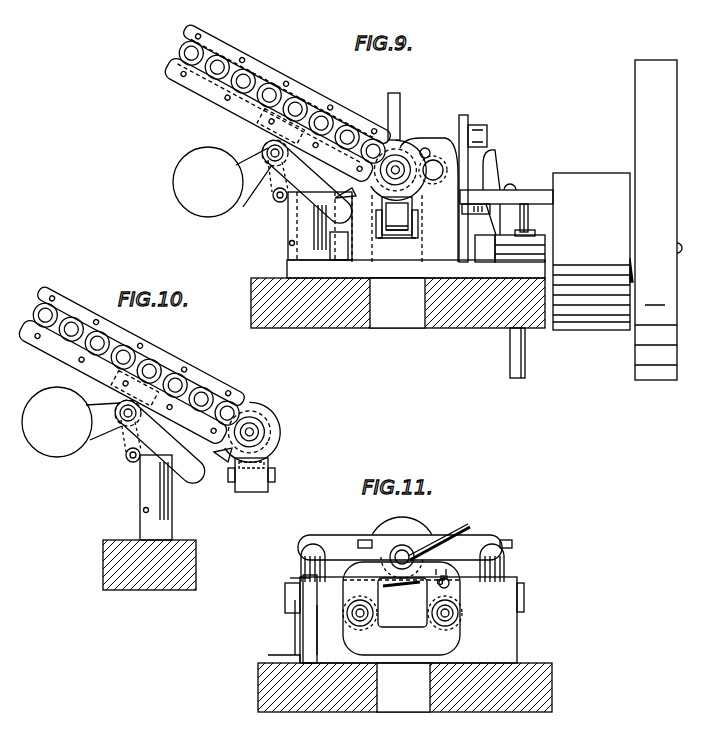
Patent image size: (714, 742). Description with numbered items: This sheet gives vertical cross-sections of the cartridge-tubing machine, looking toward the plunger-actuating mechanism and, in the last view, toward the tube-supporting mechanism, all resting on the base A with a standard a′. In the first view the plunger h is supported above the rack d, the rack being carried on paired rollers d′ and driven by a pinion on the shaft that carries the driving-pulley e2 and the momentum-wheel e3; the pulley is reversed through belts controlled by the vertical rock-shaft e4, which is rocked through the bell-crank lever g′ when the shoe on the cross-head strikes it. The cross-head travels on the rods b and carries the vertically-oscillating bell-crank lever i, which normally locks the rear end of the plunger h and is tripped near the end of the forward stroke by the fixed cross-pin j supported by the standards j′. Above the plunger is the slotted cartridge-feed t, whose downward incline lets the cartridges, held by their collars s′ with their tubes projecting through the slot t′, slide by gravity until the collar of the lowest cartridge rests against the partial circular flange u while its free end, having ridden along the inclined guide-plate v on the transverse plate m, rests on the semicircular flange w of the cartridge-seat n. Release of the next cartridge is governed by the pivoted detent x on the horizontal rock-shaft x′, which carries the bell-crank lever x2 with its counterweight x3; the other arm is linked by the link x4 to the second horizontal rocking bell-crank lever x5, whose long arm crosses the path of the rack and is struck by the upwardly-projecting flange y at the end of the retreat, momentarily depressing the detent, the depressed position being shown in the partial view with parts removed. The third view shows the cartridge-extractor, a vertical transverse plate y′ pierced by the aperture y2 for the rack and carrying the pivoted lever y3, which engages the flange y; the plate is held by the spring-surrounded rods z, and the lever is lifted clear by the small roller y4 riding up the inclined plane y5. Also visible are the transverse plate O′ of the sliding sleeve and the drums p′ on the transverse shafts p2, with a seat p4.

In FIG. 9, the base A is at (268, 280).
In FIG. 10, the base A is at (198, 562).
In FIG. 11, the base A is at (552, 683).
In FIG. 9, the standard a′ is at (322, 226).
In FIG. 10, the standard a′ is at (183, 526).
In FIG. 9, the rods b is at (433, 176).
In FIG. 9, the rack d is at (418, 214).
In FIG. 10, the rack d is at (275, 478).
In FIG. 9, the paired rollers d′ is at (405, 244).
In FIG. 9, the driving-pulley e2 is at (593, 251).
In FIG. 9, the momentum-wheel e3 is at (658, 220).
In FIG. 9, the vertical rock-shaft e4 is at (512, 353).
In FIG. 9, the bell-crank lever g′ is at (536, 196).
In FIG. 9, the plunger h is at (395, 166).
In FIG. 9, the vertically-oscillating bell-crank lever i is at (388, 100).
In FIG. 9, the fixed cross-pin j is at (440, 137).
In FIG. 9, the standards j′ is at (468, 117).
In FIG. 11, the transverse plate m is at (408, 620).
In FIG. 11, the cartridge-seat n is at (402, 545).
In FIG. 11, the transverse plate O′ is at (380, 533).
In FIG. 11, the drums p′ is at (308, 545).
In FIG. 11, the transverse shafts p2 is at (290, 600).
In FIG. 11, the spring seat p4 is at (352, 566).
In FIG. 10, the collars s′ is at (258, 418).
In FIG. 9, the slotted cartridge-feed t is at (247, 62).
In FIG. 10, the slotted cartridge-feed t is at (154, 358).
In FIG. 10, the slot t′ is at (212, 380).
In FIG. 10, the partial circular flange u is at (270, 432).
In FIG. 11, the inclined guide-plate v is at (452, 540).
In FIG. 11, the semicircular flange w is at (388, 566).
In FIG. 9, the pivoted detent x is at (328, 186).
In FIG. 10, the pivoted detent x is at (159, 441).
In FIG. 9, the horizontal rock-shaft x′ is at (270, 172).
In FIG. 10, the horizontal rock-shaft x′ is at (118, 436).
In FIG. 9, the bell-crank lever x2 is at (265, 155).
In FIG. 10, the bell-crank lever x2 is at (120, 414).
In FIG. 9, the counterweight x3 is at (208, 182).
In FIG. 10, the counterweight x3 is at (57, 422).
In FIG. 9, the link x4 is at (345, 192).
In FIG. 10, the link x4 is at (150, 450).
In FIG. 9, the second horizontal rocking bell-crank lever x5 is at (356, 200).
In FIG. 10, the second horizontal rocking bell-crank lever x5 is at (226, 470).
In FIG. 9, the upwardly-projecting flange y is at (397, 216).
In FIG. 10, the upwardly-projecting flange y is at (251, 475).
In FIG. 11, the vertical transverse plate y′ is at (401, 606).
In FIG. 11, the aperture y2 is at (402, 602).
In FIG. 11, the pivoted lever y3 is at (334, 600).
In FIG. 11, the small roller y4 is at (302, 580).
In FIG. 11, the inclined plane y5 is at (310, 638).
In FIG. 11, the rods z is at (362, 627).